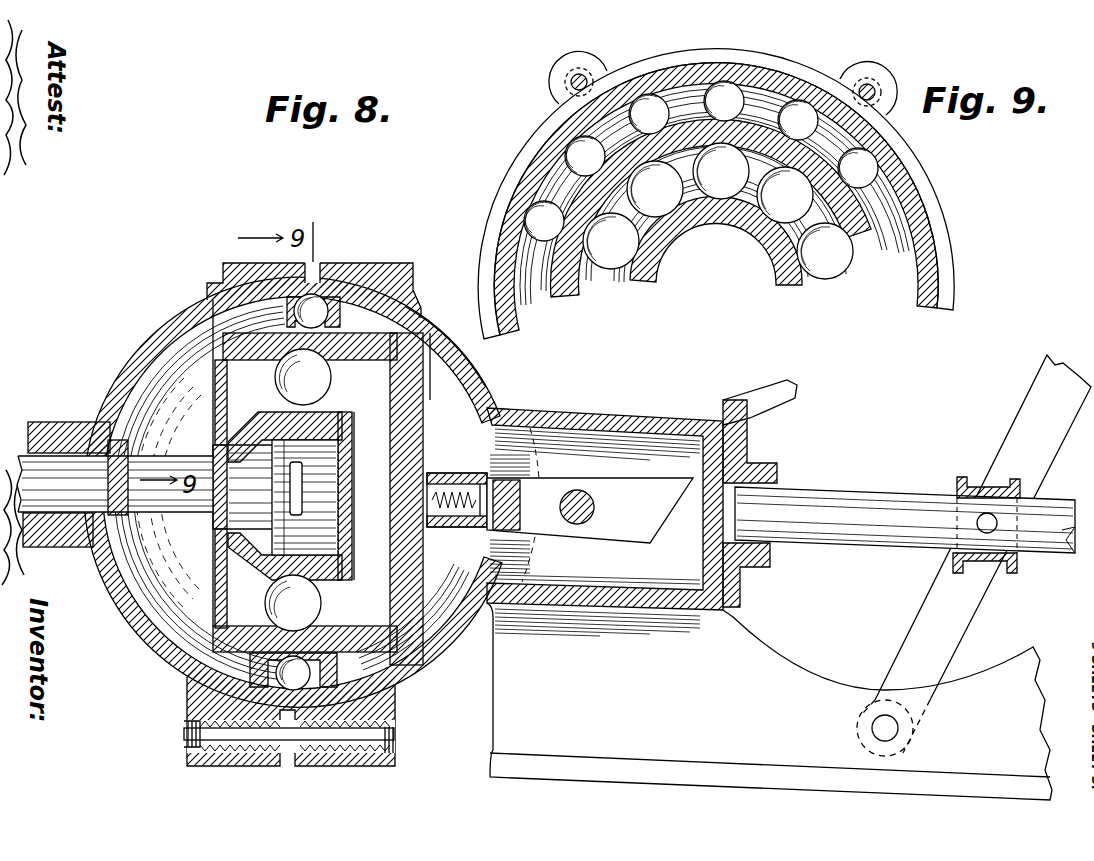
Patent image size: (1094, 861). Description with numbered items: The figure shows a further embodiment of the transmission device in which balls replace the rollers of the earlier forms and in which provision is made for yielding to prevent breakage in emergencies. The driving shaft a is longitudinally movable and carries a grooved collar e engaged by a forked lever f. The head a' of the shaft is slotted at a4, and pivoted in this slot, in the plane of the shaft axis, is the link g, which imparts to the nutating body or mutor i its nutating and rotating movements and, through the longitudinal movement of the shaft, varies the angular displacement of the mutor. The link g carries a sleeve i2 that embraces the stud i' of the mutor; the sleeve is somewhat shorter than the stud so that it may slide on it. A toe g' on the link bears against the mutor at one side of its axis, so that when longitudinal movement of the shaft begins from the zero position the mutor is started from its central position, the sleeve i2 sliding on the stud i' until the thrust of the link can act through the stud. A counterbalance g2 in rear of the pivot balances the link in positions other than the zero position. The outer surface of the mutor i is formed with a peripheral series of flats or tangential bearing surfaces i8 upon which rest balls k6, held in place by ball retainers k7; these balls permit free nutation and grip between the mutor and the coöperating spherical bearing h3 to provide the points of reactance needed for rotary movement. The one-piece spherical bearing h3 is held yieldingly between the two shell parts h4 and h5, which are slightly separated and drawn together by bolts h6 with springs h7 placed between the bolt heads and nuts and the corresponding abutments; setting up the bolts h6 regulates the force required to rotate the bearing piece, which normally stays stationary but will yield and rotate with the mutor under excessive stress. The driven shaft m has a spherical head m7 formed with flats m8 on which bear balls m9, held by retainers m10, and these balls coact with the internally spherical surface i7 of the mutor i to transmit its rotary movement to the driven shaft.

In FIG. 8, the shell part h5 is at (176, 315).
In FIG. 8, the shell part h4 is at (430, 343).
In FIG. 9, the shell part h4 is at (917, 175).
In FIG. 8, the spherical bearing h3 is at (381, 278).
In FIG. 9, the spherical bearing h3 is at (920, 232).
In FIG. 8, the bolts h6 is at (395, 743).
In FIG. 9, the bolts h6 is at (883, 90).
In FIG. 8, the springs h7 is at (258, 745).
In FIG. 8, the balls k6 is at (313, 296).
In FIG. 9, the balls k6 is at (583, 147).
In FIG. 8, the ball retainers k7 is at (338, 297).
In FIG. 9, the ball retainers k7 is at (555, 187).
In FIG. 8, the nutating body or mutor i is at (330, 499).
In FIG. 9, the nutating body or mutor i is at (704, 219).
In FIG. 8, the internally spherical surface i7 is at (383, 593).
In FIG. 8, the flats or tangential bearing surfaces i8 is at (297, 657).
In FIG. 9, the flats or tangential bearing surfaces i8 is at (583, 177).
In FIG. 8, the stud i' is at (454, 532).
In FIG. 8, the sleeve i2 is at (447, 477).
In FIG. 8, the driven shaft m is at (145, 484).
In FIG. 8, the spherical head or bearing surface m7 is at (349, 548).
In FIG. 9, the spherical head or bearing surface m7 is at (710, 212).
In FIG. 8, the flats or tangential bearing surfaces m8 is at (298, 575).
In FIG. 9, the flats or tangential bearing surfaces m8 is at (647, 249).
In FIG. 8, the balls m9 is at (298, 490).
In FIG. 9, the balls m9 is at (820, 252).
In FIG. 8, the retainers m10 is at (346, 445).
In FIG. 9, the retainers m10 is at (600, 277).
In FIG. 8, the link g is at (590, 494).
In FIG. 8, the toe g' is at (457, 476).
In FIG. 8, the counterbalance g2 is at (687, 487).
In FIG. 8, the driving shaft a is at (905, 506).
In FIG. 8, the head of the shaft a' is at (760, 493).
In FIG. 8, the slot a4 is at (605, 509).
In FIG. 8, the grooved collar e is at (1017, 570).
In FIG. 8, the forked lever f is at (968, 610).
In FIG. 8, the base b is at (769, 701).